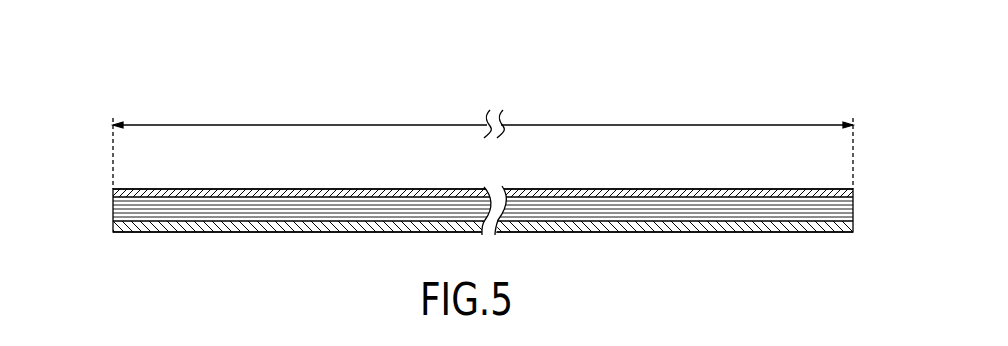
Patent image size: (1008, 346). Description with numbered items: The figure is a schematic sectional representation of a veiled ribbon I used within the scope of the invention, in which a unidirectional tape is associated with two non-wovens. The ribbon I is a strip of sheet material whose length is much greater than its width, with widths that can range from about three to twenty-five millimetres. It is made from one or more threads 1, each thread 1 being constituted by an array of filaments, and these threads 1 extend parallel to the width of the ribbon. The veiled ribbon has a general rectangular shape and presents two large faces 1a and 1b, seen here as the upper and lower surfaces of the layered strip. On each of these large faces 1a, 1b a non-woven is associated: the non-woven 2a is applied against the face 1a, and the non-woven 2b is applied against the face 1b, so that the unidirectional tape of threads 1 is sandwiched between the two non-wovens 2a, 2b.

The thread 1 is at (467, 213).
The large face 1a is at (282, 193).
The large face 1b is at (205, 231).
The non-woven 2a is at (219, 193).
The non-woven 2b is at (290, 231).
The veiled ribbon I is at (282, 102).